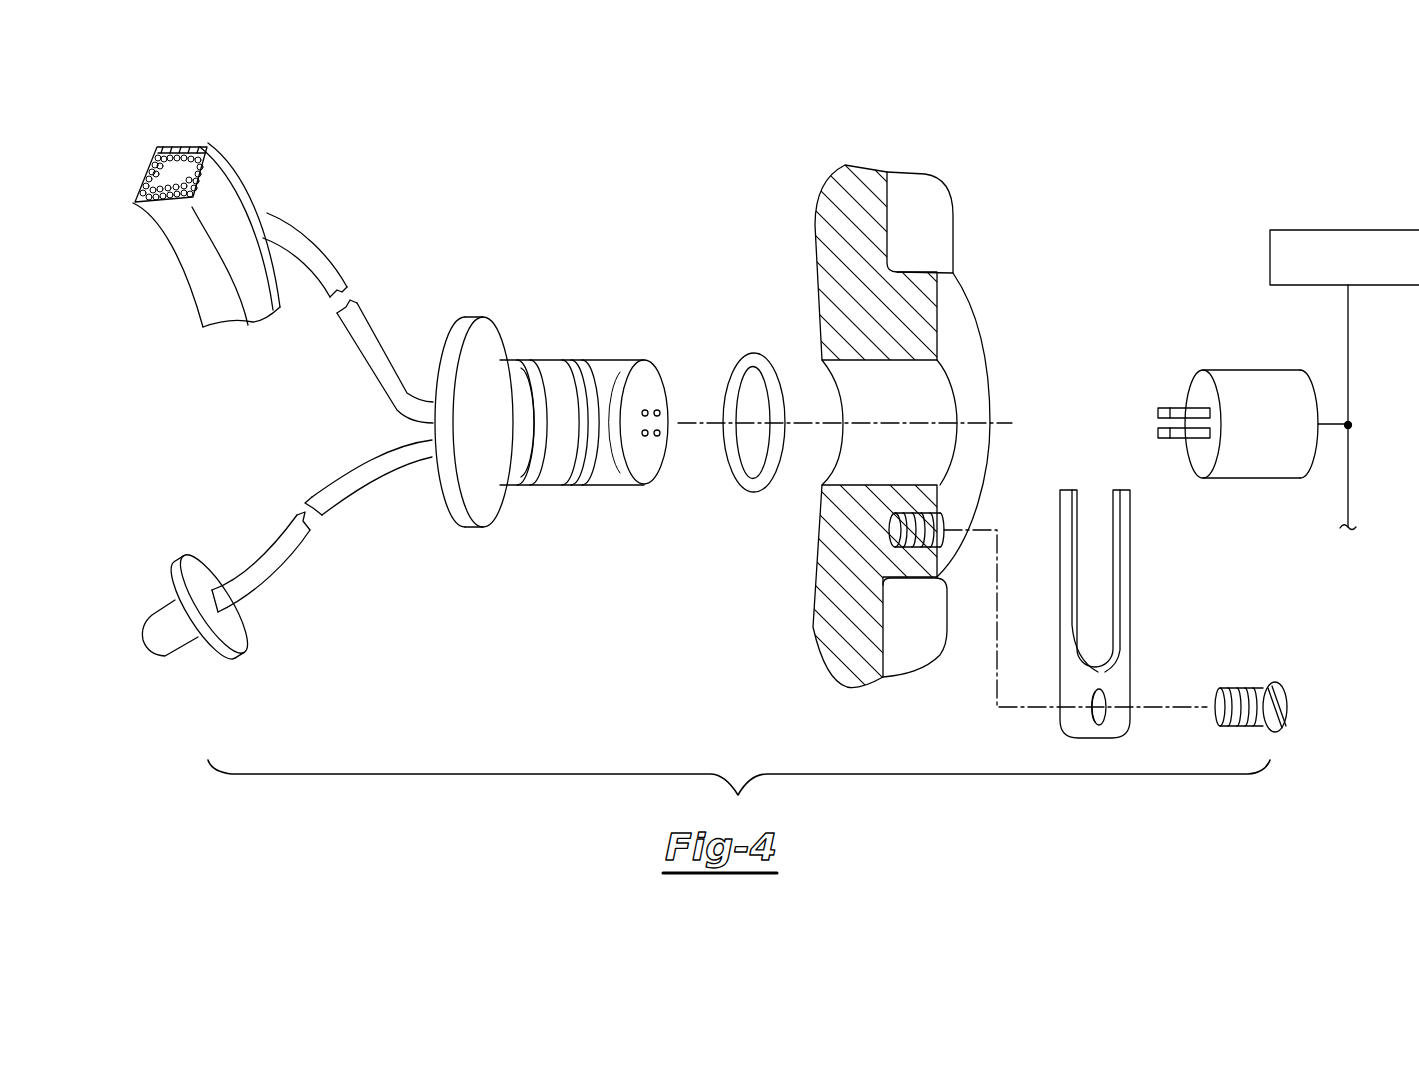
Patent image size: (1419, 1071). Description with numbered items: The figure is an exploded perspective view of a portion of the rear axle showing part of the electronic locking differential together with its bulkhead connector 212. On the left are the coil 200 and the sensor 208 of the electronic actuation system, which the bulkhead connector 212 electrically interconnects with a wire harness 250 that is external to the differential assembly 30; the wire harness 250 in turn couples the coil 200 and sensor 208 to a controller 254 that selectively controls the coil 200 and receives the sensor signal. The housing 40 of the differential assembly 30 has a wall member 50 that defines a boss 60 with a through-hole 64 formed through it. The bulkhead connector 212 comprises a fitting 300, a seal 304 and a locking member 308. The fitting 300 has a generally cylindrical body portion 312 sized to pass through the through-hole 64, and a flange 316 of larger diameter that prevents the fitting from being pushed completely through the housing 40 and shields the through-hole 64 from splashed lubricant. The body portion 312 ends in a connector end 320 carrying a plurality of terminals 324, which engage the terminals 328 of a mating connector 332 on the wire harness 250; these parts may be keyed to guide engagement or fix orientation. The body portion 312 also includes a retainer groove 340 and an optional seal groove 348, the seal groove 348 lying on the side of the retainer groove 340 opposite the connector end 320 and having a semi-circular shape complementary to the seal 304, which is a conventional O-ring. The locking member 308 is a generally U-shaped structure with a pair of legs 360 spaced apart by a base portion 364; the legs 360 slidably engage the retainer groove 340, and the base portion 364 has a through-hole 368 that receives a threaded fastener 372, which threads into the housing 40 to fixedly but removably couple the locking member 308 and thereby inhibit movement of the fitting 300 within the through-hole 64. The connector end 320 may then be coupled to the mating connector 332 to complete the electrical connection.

The differential assembly 30 is at (854, 410).
The housing 40 is at (875, 238).
The wall member 50 is at (873, 185).
The boss 60 is at (935, 316).
The through-hole 64 is at (897, 461).
The coil 200 is at (235, 178).
The sensor 208 is at (240, 632).
The bulkhead connector 212 is at (394, 405).
The wire harness 250 is at (1348, 337).
The controller 254 is at (1357, 230).
The fitting 300 is at (576, 408).
The seal 304 is at (739, 505).
The locking member 308 is at (1141, 628).
The body portion 312 is at (572, 436).
The flange 316 is at (488, 340).
The connector end 320 is at (663, 428).
The terminals 324 is at (649, 409).
The terminals 328 is at (1158, 433).
The mating connector 332 is at (1212, 399).
The retainer groove 340 is at (583, 478).
The seal groove 348 is at (525, 473).
The legs 360 is at (1072, 538).
The base portion 364 is at (1115, 680).
The through-hole 368 is at (1105, 708).
The threaded fastener 372 is at (1253, 683).